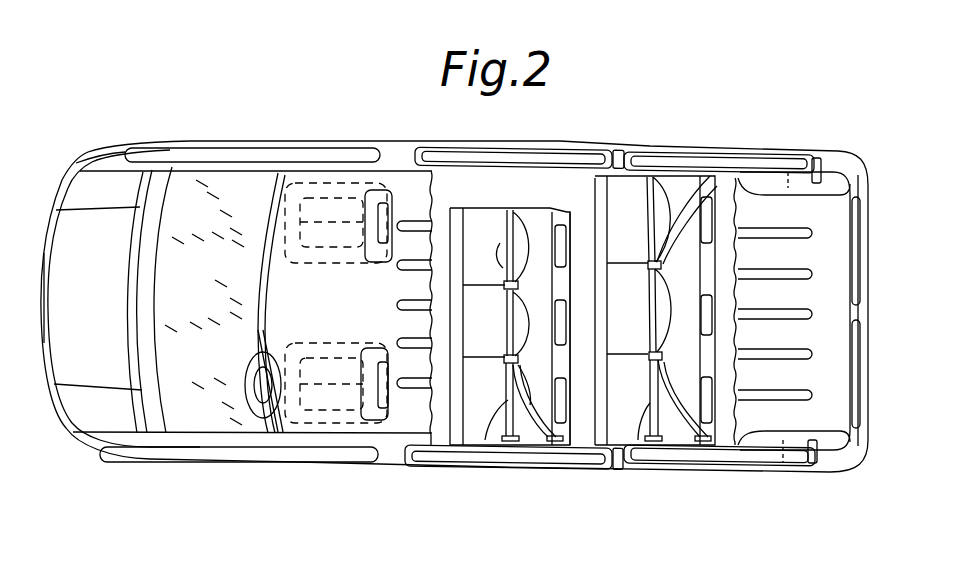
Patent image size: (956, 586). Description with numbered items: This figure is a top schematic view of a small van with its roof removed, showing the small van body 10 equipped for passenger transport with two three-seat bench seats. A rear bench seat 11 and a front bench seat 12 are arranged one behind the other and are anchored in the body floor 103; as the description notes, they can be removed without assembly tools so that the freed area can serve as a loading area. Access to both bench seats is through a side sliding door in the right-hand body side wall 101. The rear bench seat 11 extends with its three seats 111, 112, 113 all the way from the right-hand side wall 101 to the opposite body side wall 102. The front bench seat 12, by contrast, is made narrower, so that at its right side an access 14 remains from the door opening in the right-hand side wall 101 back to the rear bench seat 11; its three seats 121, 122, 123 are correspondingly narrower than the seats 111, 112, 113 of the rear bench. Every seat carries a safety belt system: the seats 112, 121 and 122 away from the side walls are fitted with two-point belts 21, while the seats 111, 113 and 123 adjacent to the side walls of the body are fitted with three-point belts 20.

The small van body 10 is at (854, 308).
The rear bench seat 11 is at (731, 209).
The front bench seat 12 is at (580, 364).
The access 14 is at (473, 180).
The three-point belt 20 is at (684, 180).
The two-point belt 21 is at (505, 243).
The right-hand body side wall 101 is at (590, 148).
The body side wall 102 is at (526, 468).
The body floor 103 is at (719, 446).
The seat 111 is at (639, 235).
The seat 112 is at (639, 316).
The seat 113 is at (637, 415).
The seat 121 is at (497, 271).
The seat 122 is at (497, 336).
The seat 123 is at (497, 402).